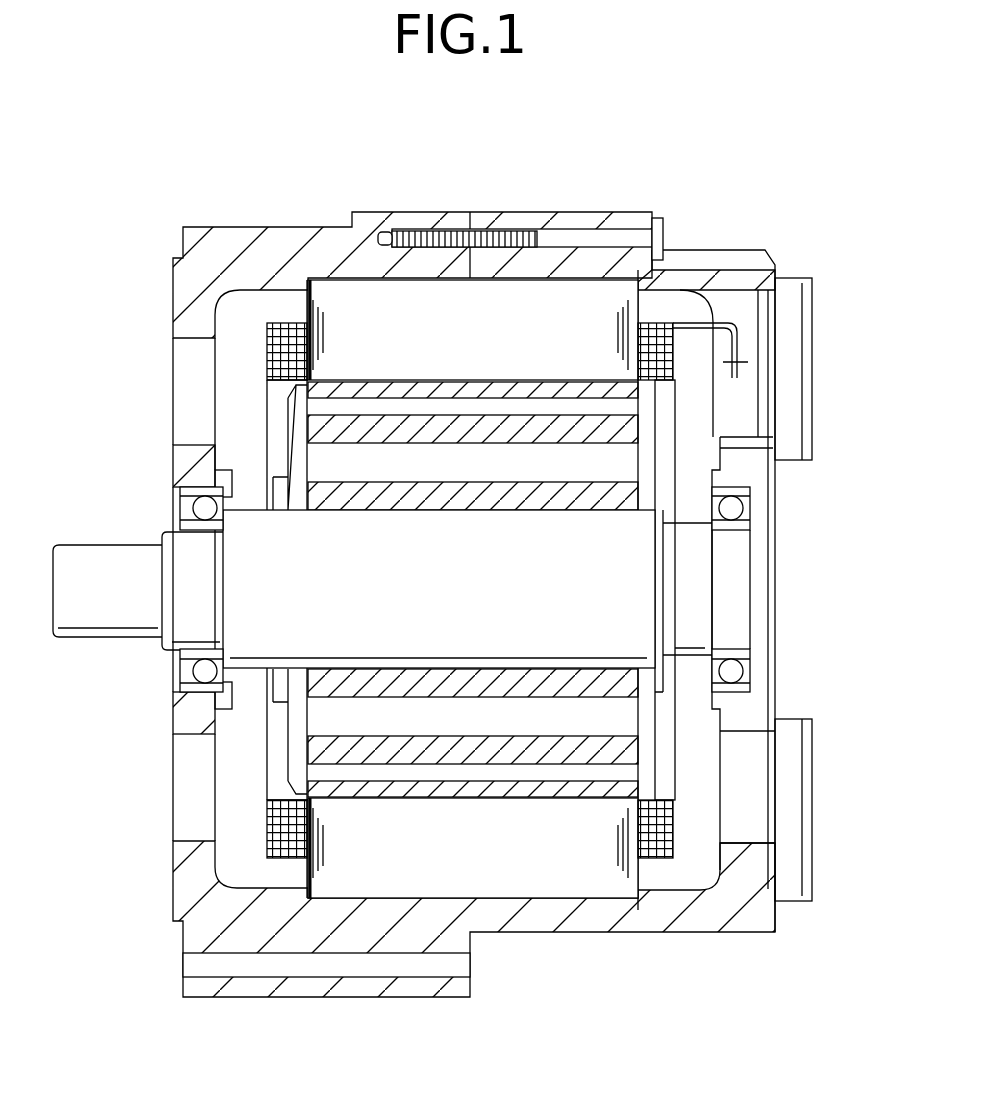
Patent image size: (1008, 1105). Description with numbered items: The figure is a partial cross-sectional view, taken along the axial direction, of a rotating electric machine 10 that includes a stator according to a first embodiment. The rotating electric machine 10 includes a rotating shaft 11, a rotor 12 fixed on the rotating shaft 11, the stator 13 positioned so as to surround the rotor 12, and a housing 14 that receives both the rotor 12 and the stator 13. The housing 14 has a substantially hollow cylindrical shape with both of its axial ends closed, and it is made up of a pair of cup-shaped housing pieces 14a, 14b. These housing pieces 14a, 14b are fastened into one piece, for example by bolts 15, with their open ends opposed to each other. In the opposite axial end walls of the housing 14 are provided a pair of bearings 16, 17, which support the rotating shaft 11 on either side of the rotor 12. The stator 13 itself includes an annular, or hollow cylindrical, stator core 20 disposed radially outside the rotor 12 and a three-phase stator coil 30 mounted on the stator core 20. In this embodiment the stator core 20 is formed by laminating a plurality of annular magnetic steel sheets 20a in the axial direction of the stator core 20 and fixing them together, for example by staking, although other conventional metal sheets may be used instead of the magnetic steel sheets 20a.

The rotating electric machine 10 is at (782, 183).
The rotating shaft 11 is at (107, 622).
The rotor 12 is at (612, 425).
The stator 13 is at (470, 665).
The housing 14 is at (502, 186).
The housing piece 14a is at (413, 218).
The housing piece 14b is at (505, 218).
The bolt 15 is at (617, 237).
The bearing 16 is at (193, 485).
The bearing 17 is at (747, 503).
The stator core 20 is at (562, 890).
The magnetic steel sheet 20a is at (323, 857).
The stator coil 30 is at (658, 850).